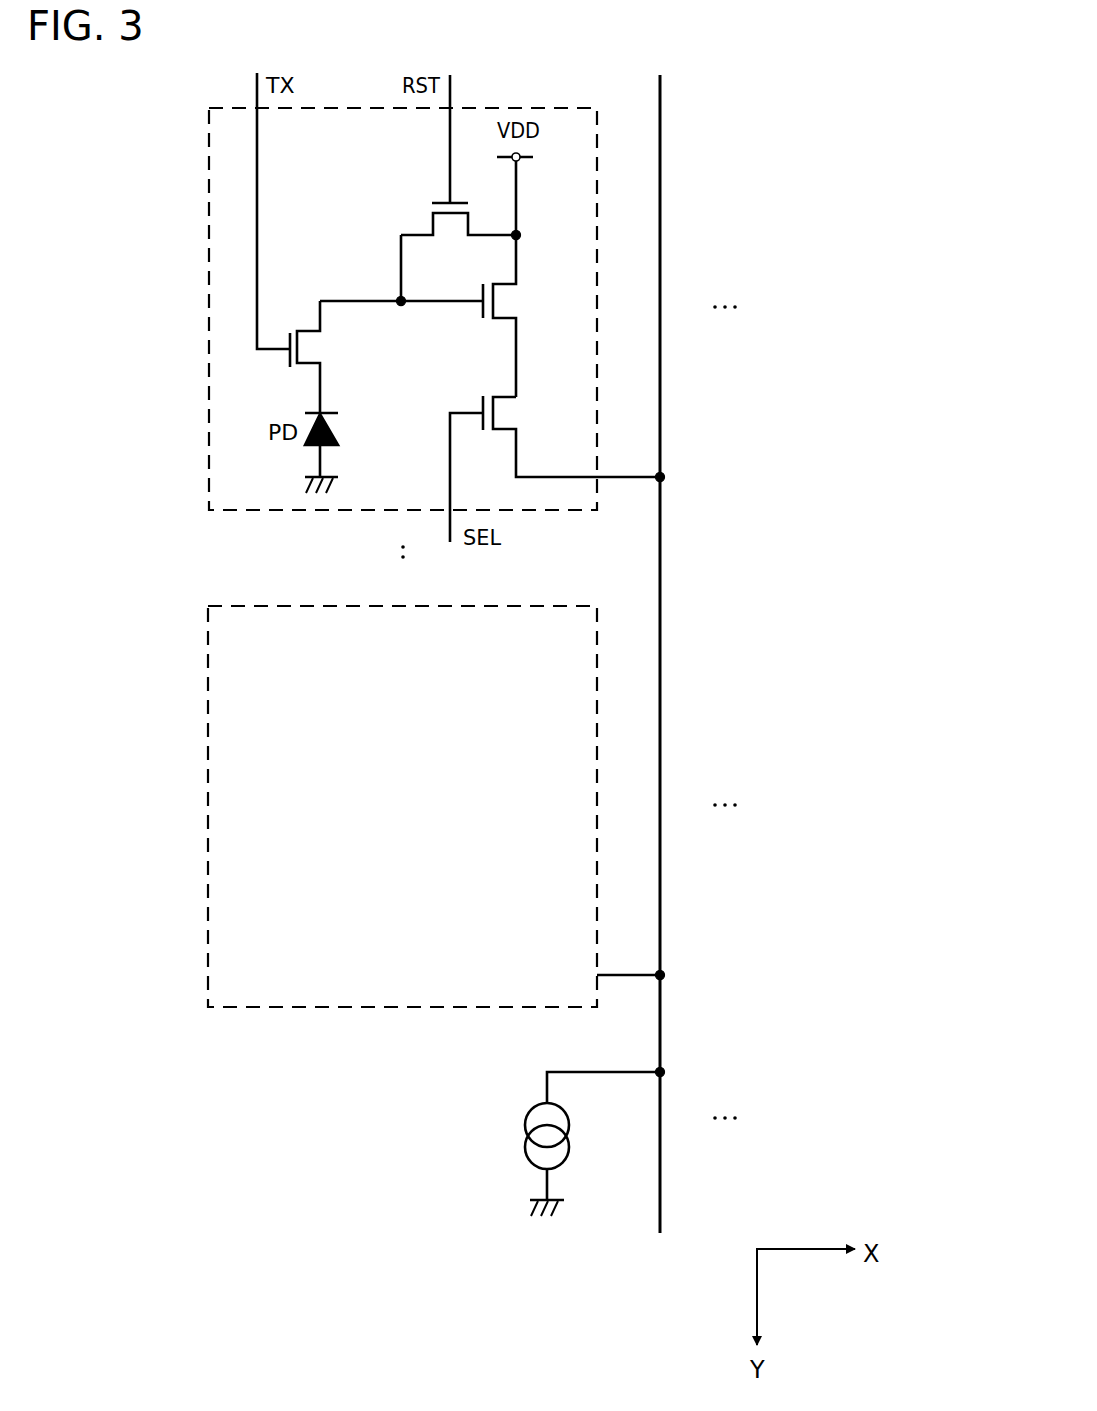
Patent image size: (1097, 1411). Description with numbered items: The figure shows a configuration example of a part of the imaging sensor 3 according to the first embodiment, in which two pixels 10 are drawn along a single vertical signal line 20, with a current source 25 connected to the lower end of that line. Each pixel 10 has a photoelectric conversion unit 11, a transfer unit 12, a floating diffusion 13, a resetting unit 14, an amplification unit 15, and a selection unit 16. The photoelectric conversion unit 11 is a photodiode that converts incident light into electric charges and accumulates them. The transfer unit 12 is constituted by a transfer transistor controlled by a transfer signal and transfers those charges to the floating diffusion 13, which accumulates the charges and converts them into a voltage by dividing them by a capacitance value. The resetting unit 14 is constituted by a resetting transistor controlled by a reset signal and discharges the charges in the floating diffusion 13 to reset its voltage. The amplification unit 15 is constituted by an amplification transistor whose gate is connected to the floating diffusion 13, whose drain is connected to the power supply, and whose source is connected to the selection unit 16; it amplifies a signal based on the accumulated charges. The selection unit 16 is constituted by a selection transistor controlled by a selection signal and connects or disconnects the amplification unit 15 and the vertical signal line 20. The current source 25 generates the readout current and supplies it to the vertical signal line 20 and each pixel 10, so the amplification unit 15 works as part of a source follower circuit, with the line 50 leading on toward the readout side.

The imaging sensor 3 is at (97, 157).
The pixel 10 is at (597, 181).
The photoelectric conversion unit 11 is at (342, 445).
The transfer unit 12 is at (342, 368).
The floating diffusion 13 is at (392, 320).
The resetting unit 14 is at (428, 232).
The amplification unit 15 is at (529, 278).
The selection unit 16 is at (529, 394).
The vertical signal line 20 is at (661, 567).
The current source 25 is at (520, 1138).
The column signal line / readout 50 is at (688, 1259).